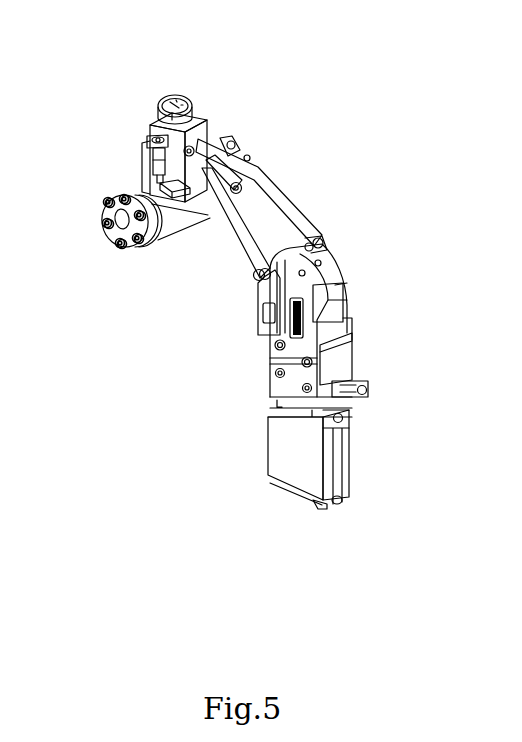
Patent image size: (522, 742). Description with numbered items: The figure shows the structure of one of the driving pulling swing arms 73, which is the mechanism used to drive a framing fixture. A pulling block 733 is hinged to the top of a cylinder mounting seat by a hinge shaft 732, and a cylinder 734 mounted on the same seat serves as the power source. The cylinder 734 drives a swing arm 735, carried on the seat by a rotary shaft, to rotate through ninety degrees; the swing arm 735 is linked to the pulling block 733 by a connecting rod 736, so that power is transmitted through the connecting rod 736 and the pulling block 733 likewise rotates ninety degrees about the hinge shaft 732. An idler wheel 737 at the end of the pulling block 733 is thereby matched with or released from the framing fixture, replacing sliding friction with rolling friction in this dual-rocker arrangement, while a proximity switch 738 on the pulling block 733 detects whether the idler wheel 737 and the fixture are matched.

The driving pulling swing arm 73 is at (329, 138).
The hinge shaft 732 is at (104, 236).
The pulling block 733 is at (208, 124).
The cylinder 734 is at (340, 280).
The swing arm 735 is at (267, 297).
The connecting rod 736 is at (281, 204).
The idler wheel 737 is at (178, 105).
The proximity switch 738 is at (157, 159).